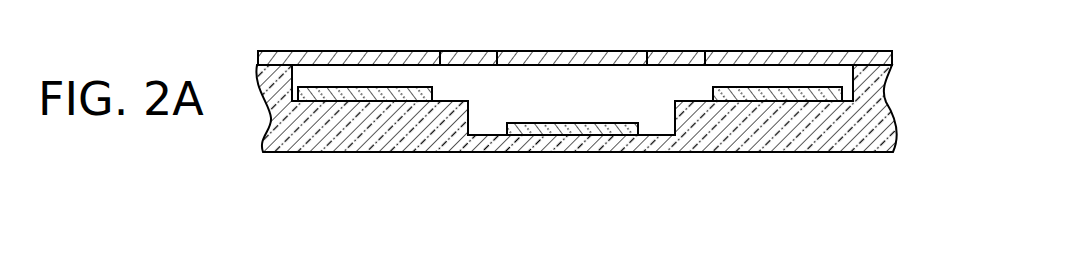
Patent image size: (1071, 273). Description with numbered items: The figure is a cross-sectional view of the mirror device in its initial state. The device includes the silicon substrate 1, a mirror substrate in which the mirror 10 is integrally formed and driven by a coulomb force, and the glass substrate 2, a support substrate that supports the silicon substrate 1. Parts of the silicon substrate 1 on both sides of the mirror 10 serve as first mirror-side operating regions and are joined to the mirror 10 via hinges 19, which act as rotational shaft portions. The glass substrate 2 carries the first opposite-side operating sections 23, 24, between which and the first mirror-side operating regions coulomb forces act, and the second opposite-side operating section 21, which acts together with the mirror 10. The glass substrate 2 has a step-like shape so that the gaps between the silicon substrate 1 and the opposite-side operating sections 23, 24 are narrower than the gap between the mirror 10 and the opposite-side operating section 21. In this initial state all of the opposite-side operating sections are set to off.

The silicon substrate 1 is at (370, 51).
The hinges 19 is at (466, 51).
The mirror 10 is at (574, 51).
The glass substrate 2 is at (879, 126).
The opposite-side operating section 23 is at (363, 101).
The opposite-side operating section 24 is at (778, 101).
The opposite-side operating section 21 is at (571, 131).